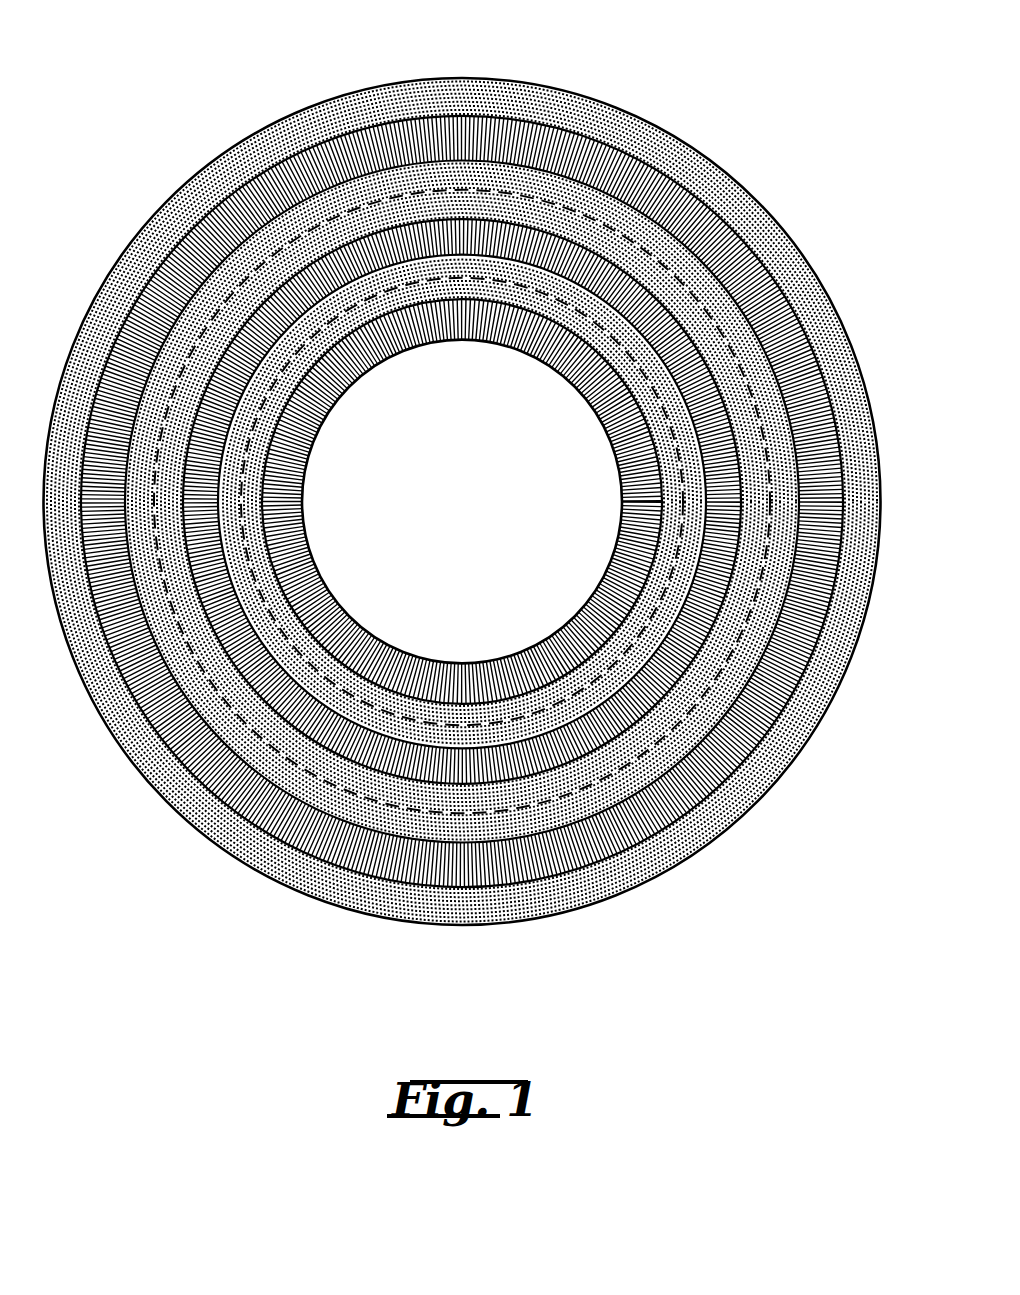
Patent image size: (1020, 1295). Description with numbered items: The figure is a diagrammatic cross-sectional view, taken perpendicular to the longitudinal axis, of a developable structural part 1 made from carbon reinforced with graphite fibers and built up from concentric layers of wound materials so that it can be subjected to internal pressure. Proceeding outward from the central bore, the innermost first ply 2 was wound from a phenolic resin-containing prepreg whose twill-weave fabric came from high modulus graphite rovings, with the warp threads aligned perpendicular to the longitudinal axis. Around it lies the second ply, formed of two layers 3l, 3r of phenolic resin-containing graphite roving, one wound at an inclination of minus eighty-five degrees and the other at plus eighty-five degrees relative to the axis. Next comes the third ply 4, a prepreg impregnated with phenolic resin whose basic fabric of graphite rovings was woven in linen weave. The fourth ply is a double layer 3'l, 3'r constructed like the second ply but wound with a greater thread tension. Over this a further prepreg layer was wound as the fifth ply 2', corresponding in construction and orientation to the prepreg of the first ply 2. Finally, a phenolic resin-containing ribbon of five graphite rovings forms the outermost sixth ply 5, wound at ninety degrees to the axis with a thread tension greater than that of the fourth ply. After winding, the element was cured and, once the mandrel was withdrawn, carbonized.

The structural part 1 is at (512, 68).
The innermost first ply 2 is at (462, 501).
The fifth ply 2' is at (462, 562).
The layer of second ply 3l is at (587, 337).
The layer of second ply 3r is at (662, 400).
The layer of double layer fourth ply 3'l is at (501, 512).
The layer of double layer fourth ply 3'r is at (462, 538).
The third ply 4 is at (710, 534).
The outermost sixth ply 5 is at (497, 907).